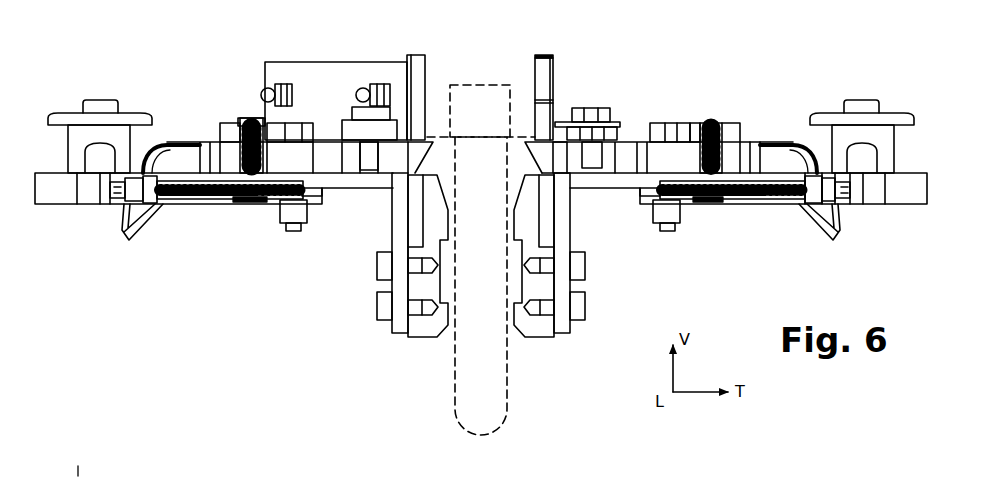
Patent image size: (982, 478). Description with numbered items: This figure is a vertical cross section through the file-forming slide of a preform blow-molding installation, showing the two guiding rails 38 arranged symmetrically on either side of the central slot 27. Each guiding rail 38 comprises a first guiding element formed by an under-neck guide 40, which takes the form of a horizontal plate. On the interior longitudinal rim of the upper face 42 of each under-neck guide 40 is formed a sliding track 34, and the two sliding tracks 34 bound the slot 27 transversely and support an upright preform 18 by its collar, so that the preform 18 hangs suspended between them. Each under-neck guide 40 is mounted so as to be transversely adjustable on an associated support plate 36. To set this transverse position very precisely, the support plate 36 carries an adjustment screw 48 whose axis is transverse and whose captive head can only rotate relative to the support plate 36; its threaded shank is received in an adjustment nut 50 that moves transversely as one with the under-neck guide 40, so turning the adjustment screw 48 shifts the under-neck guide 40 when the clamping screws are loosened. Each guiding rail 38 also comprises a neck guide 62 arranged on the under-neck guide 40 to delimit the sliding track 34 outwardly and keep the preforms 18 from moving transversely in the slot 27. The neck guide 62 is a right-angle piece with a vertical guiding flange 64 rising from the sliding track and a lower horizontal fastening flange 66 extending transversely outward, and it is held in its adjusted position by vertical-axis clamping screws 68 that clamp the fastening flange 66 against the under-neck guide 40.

The preform 18 is at (452, 372).
The central slot 27 is at (481, 272).
The sliding track 34 is at (533, 137).
The support plate 36 is at (62, 192).
The guiding rail 38 is at (902, 190).
The under-neck guide 40 is at (403, 157).
The upper face 42 is at (318, 138).
The adjustment screw 48 is at (753, 197).
The adjustment nut 50 is at (705, 203).
The neck guide 62 is at (559, 64).
The guiding flange 64 is at (542, 92).
The fastening flange 66 is at (630, 137).
The clamping screw 68 is at (592, 110).